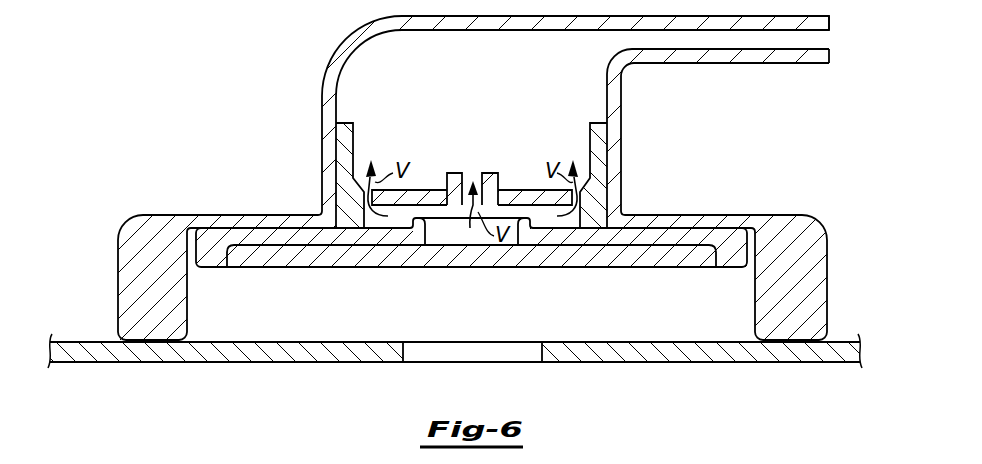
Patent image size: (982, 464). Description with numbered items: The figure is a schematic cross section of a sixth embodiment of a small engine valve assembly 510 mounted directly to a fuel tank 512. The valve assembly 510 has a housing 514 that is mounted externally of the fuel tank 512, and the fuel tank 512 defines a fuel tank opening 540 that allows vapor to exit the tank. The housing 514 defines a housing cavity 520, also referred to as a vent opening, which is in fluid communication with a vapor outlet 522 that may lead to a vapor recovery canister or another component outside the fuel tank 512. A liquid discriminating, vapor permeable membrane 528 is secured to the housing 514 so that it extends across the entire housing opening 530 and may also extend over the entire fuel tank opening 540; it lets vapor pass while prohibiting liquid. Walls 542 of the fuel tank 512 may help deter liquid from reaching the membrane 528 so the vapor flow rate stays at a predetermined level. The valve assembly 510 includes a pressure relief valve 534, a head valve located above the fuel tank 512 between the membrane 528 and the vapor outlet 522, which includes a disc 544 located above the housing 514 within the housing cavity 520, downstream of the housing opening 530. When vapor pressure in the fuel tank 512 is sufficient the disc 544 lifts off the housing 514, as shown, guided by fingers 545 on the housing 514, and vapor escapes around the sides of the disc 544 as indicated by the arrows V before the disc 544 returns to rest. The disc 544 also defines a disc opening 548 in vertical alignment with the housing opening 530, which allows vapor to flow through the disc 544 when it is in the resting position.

The valve assembly 510 is at (269, 51).
The fuel tank 512 is at (82, 341).
The housing 514 is at (132, 235).
The housing cavity 520 is at (494, 77).
The vapor outlet 522 is at (818, 40).
The membrane 528 is at (323, 262).
The housing opening 530 is at (443, 238).
The pressure relief valve 534 is at (436, 150).
The fuel tank opening 540 is at (465, 353).
The walls 542 is at (267, 363).
The disc 544 is at (517, 190).
The fingers 545 is at (598, 147).
The disc opening 548 is at (467, 173).